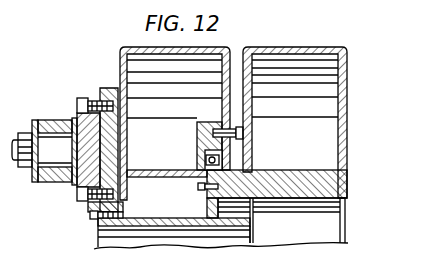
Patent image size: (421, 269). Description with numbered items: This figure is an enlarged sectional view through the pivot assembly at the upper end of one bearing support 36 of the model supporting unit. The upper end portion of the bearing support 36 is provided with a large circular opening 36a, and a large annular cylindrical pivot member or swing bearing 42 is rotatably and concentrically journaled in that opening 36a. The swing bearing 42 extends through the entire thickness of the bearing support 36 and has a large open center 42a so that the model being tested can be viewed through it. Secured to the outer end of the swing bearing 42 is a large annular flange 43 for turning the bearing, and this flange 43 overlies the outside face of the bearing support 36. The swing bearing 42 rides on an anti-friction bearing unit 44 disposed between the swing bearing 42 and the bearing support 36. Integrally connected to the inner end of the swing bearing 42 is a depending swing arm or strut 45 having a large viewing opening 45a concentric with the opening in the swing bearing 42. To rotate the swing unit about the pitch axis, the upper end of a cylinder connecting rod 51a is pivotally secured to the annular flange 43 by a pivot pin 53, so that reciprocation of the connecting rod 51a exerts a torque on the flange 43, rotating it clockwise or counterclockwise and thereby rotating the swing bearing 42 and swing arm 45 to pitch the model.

The bearing support 36 is at (121, 50).
The circular opening 36a is at (173, 184).
The swing bearing 42 is at (160, 217).
The open center 42a is at (190, 228).
The annular flange 43 is at (107, 88).
The anti-friction bearing unit 44 is at (239, 160).
The swing arm 45 is at (301, 46).
The viewing opening 45a is at (310, 198).
The connecting rod 51a is at (63, 185).
The pivot pin 53 is at (44, 148).